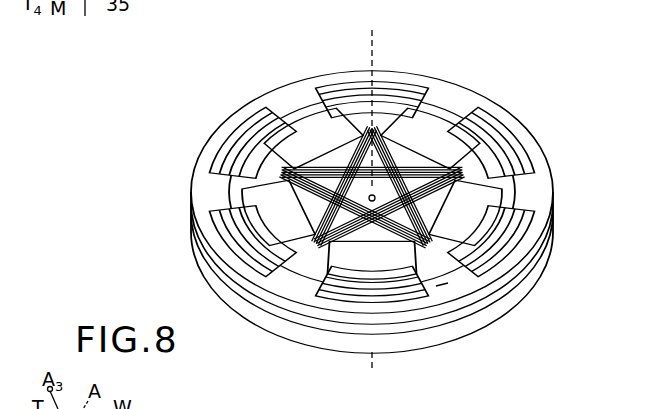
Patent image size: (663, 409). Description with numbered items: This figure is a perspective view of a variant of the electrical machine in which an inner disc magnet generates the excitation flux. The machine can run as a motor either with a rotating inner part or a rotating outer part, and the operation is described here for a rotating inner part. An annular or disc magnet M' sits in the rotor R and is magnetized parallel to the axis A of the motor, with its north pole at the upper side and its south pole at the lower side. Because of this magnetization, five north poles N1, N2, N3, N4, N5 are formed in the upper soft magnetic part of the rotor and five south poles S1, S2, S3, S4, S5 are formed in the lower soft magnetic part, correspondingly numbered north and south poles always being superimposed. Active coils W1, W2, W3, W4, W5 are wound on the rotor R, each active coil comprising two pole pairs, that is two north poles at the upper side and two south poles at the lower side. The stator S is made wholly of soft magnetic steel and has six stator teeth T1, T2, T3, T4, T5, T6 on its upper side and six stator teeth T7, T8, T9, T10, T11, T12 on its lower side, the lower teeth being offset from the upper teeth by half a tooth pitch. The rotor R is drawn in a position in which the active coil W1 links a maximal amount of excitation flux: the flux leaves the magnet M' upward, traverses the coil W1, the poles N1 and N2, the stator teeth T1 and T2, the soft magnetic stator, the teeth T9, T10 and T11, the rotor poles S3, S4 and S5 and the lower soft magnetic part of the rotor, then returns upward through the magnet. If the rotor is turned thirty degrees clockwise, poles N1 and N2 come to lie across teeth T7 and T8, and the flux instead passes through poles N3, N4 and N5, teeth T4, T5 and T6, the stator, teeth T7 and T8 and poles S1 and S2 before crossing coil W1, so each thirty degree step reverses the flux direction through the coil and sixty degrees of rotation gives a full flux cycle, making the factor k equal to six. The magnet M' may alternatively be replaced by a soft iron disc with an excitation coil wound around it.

The stator S is at (533, 236).
The rotor R is at (288, 228).
The axis of the motor A is at (380, 198).
The annular magnet or disc magnet M' is at (458, 321).
The stator tooth T1 is at (290, 90).
The stator tooth T2 is at (453, 108).
The stator tooth T3 is at (493, 200).
The stator tooth T4 is at (455, 290).
The stator tooth T5 is at (291, 295).
The stator tooth T6 is at (218, 197).
The stator tooth T7 is at (357, 85).
The stator tooth T8 is at (508, 162).
The stator tooth T9 is at (507, 253).
The stator tooth T10 is at (389, 307).
The stator tooth T11 is at (260, 277).
The stator tooth T12 is at (243, 153).
The south pole S1 is at (262, 135).
The south pole S2 is at (497, 130).
The south pole S3 is at (472, 282).
The south pole S4 is at (357, 292).
The south pole S5 is at (265, 266).
The active coil W1 is at (397, 88).
The active coil W2 is at (322, 88).
The active coil W3 is at (347, 218).
The active coil W4 is at (391, 220).
The active coil W5 is at (479, 211).
The north pole N1 is at (313, 138).
The north pole N2 is at (430, 138).
The north pole N3 is at (465, 218).
The north pole N4 is at (372, 266).
The north pole N5 is at (278, 212).